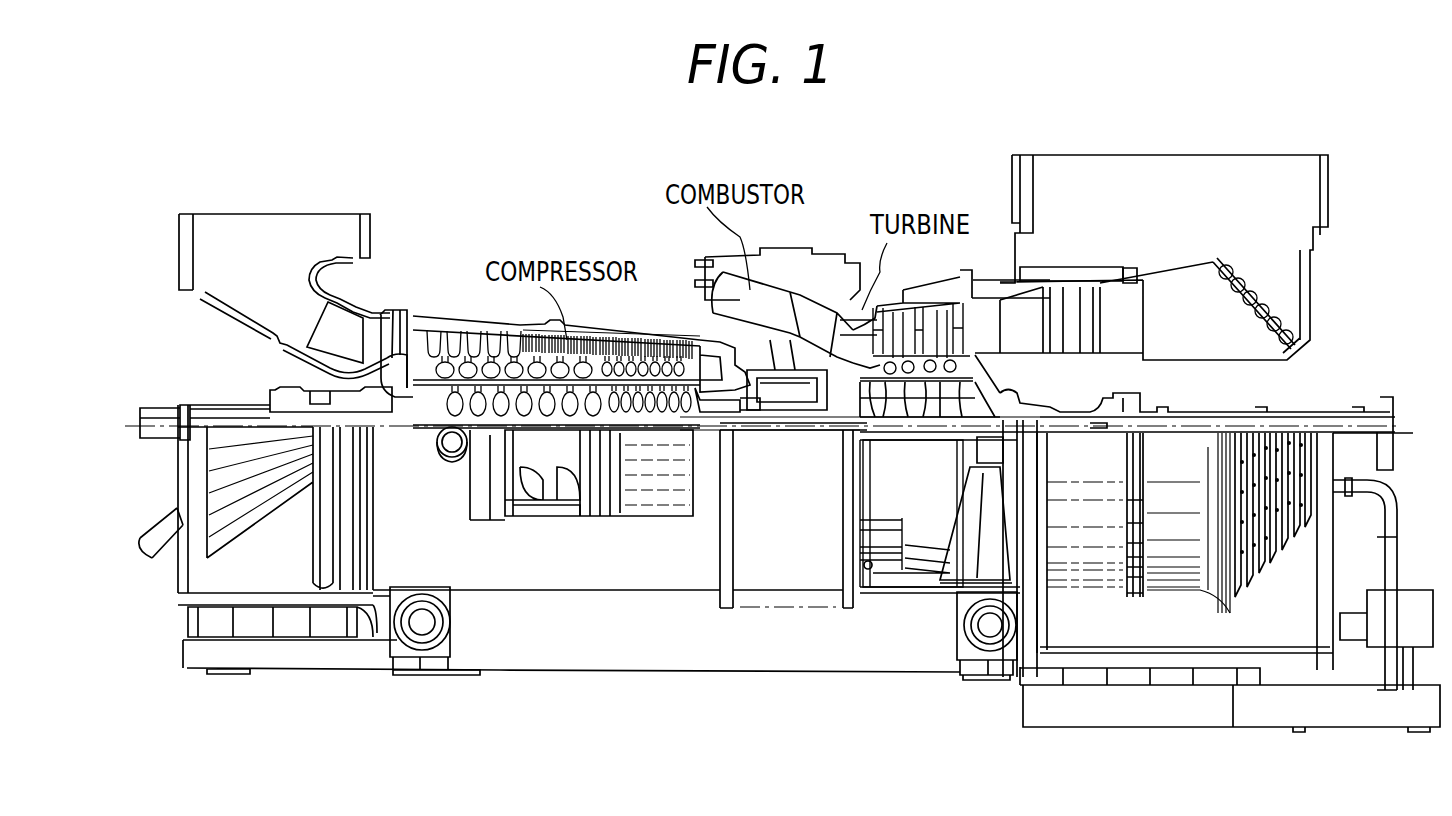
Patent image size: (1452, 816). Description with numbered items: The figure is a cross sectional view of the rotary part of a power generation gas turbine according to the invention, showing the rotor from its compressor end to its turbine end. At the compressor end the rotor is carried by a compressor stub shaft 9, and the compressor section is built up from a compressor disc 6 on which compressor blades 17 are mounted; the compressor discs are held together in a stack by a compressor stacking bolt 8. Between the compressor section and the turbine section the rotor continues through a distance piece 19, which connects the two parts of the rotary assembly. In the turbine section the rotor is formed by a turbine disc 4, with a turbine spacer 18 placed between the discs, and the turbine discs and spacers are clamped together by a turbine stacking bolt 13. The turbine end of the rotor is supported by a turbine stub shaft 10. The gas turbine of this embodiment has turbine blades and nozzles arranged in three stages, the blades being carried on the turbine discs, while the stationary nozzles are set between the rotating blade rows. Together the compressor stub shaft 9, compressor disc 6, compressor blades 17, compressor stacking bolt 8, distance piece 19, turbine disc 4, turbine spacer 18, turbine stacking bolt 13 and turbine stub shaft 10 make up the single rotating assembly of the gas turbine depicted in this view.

The compressor blade 17 is at (418, 340).
The compressor stub shaft 9 is at (437, 455).
The compressor disc 6 is at (455, 496).
The compressor stacking bolt 8 is at (673, 433).
The distance piece 19 is at (747, 417).
The turbine stacking bolt 13 is at (903, 420).
The turbine spacer 18 is at (927, 420).
The turbine disc 4 is at (993, 427).
The turbine stub shaft 10 is at (997, 398).